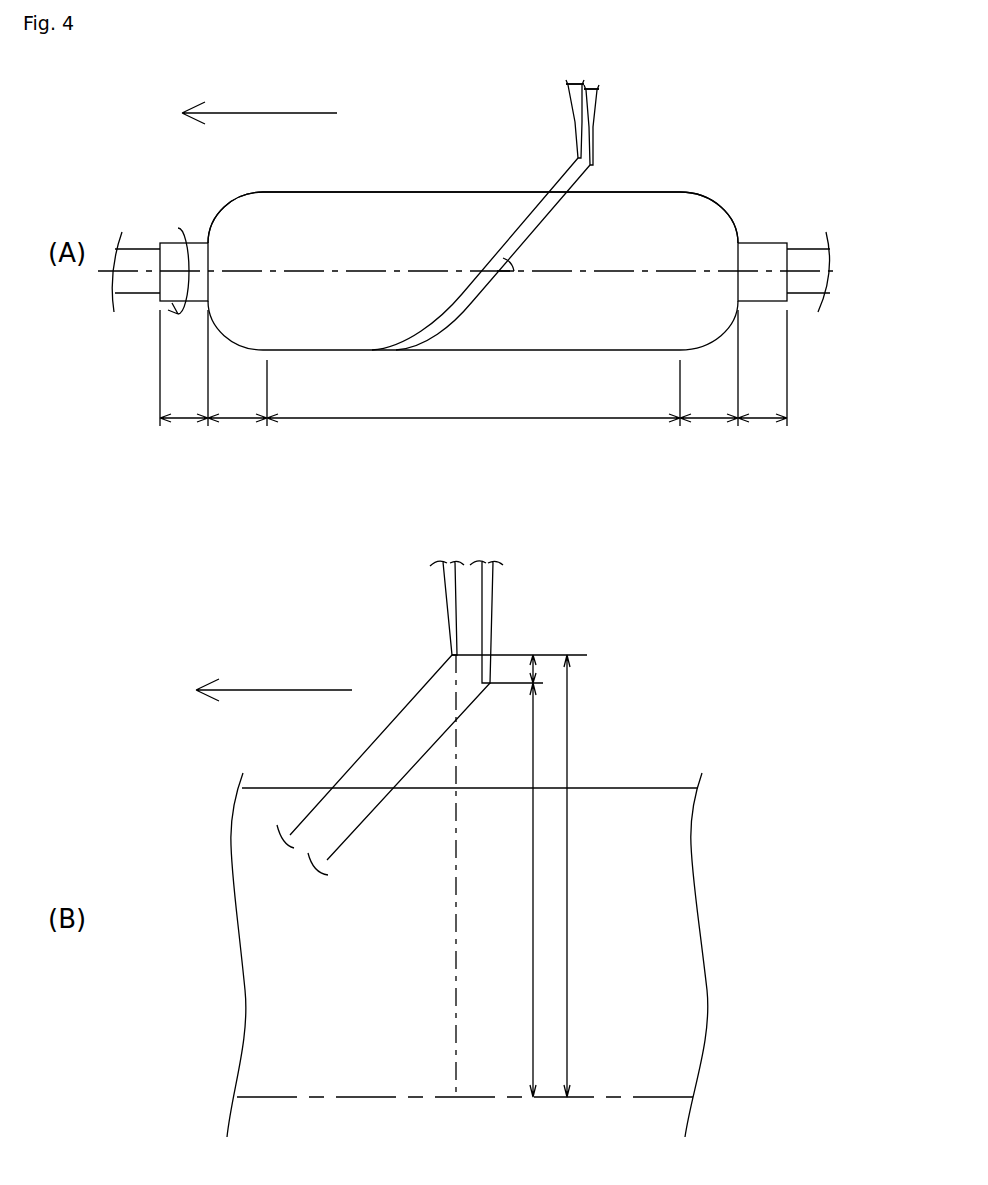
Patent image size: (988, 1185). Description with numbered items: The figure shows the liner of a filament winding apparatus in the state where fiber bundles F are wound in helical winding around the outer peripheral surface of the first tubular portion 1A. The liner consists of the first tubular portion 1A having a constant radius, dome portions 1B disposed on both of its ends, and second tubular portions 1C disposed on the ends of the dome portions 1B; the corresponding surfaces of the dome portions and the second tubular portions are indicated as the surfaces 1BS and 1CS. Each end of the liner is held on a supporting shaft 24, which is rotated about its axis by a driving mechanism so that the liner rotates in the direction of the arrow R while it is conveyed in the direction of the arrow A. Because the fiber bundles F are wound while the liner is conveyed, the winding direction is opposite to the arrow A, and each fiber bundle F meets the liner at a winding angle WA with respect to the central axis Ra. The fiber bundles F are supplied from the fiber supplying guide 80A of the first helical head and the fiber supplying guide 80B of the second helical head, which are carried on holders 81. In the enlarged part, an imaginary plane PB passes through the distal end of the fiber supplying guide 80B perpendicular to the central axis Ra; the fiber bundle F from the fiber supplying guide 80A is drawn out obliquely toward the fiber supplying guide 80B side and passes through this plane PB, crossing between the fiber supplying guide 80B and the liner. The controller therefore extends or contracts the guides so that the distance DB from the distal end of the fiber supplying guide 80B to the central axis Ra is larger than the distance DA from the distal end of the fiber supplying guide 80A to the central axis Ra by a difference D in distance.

The first tubular portion 1A is at (473, 408).
The dome portion 1B is at (473, 393).
The second tubular portion 1C is at (473, 368).
The outer peripheral surface of the dome portion 1BS is at (243, 195).
The outer peripheral surface of the second tubular portion 1CS is at (200, 243).
The supporting shaft 24 is at (139, 250).
The fiber supplying guide 80A is at (595, 160).
The fiber supplying guide 80B is at (577, 155).
The nozzle holder 81 is at (570, 100).
The fiber bundle F is at (455, 298).
The winding angle WA is at (522, 256).
The arrow indicating rotation direction R is at (178, 285).
The arrow indicating conveyance direction A is at (267, 395).
The difference in distance D is at (519, 669).
The distance from fiber supplying guide 80A to central axis DA is at (520, 890).
The distance from fiber supplying guide 80B to central axis DB is at (555, 876).
The imaginary plane PB is at (460, 862).
The central axis Ra is at (385, 1097).